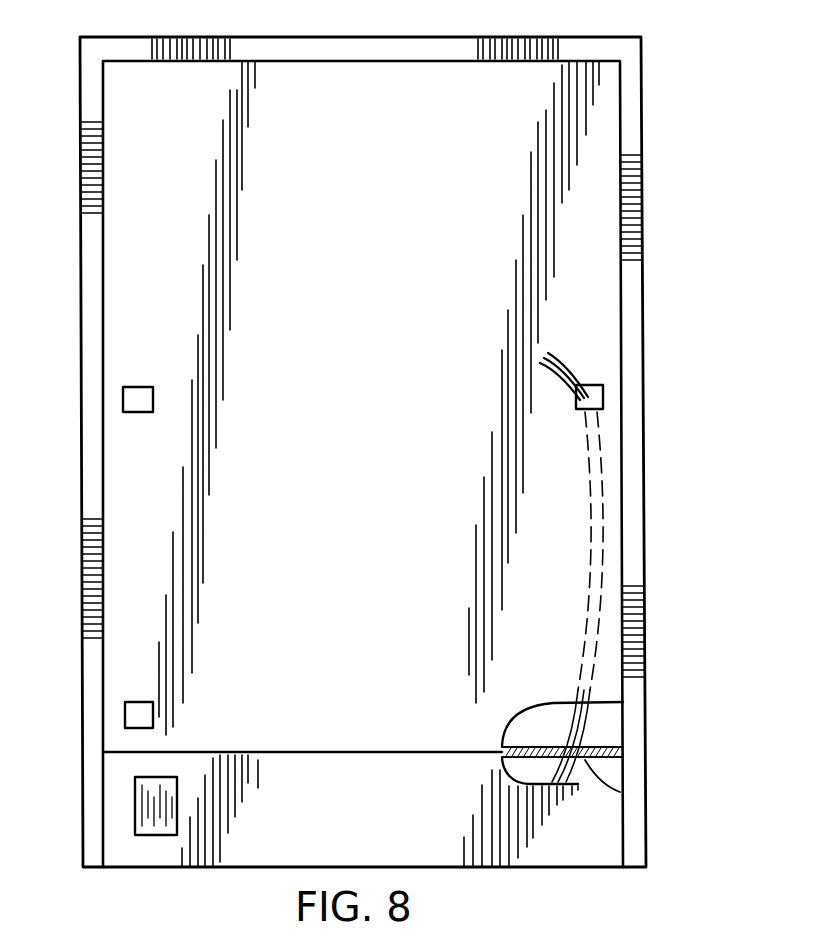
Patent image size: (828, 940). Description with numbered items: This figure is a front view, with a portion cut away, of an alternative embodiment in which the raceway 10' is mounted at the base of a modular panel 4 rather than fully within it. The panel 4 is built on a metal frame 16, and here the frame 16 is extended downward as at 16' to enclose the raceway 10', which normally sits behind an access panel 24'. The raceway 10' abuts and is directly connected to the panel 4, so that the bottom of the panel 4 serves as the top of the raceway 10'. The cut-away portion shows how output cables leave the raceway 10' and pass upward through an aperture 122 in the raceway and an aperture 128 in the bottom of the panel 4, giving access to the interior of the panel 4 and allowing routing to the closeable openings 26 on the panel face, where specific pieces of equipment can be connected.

The modular panel 4 is at (595, 259).
The metal frame 16 is at (666, 406).
The extended frame 16' is at (64, 470).
The raceway 10' is at (407, 743).
The access panel 24' is at (362, 831).
The closeable openings 26 is at (123, 395).
The aperture in bottom of panel 128 is at (585, 745).
The aperture in raceway 122 is at (620, 792).